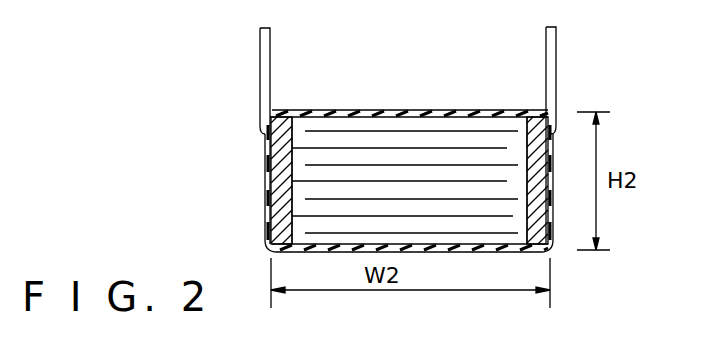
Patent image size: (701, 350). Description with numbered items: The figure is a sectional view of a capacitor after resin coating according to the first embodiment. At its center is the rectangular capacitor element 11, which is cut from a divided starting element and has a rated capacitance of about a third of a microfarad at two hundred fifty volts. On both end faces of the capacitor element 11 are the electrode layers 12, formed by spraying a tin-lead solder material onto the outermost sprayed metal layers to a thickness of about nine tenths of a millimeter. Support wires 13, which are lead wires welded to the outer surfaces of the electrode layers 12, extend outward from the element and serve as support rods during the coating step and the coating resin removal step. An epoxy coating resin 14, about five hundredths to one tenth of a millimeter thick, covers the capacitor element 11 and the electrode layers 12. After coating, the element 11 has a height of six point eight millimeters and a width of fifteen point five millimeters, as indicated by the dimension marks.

The capacitor element 11 is at (343, 128).
The electrode layer 12 is at (278, 168).
The support wire 13 is at (260, 72).
The coating resin 14 is at (412, 110).